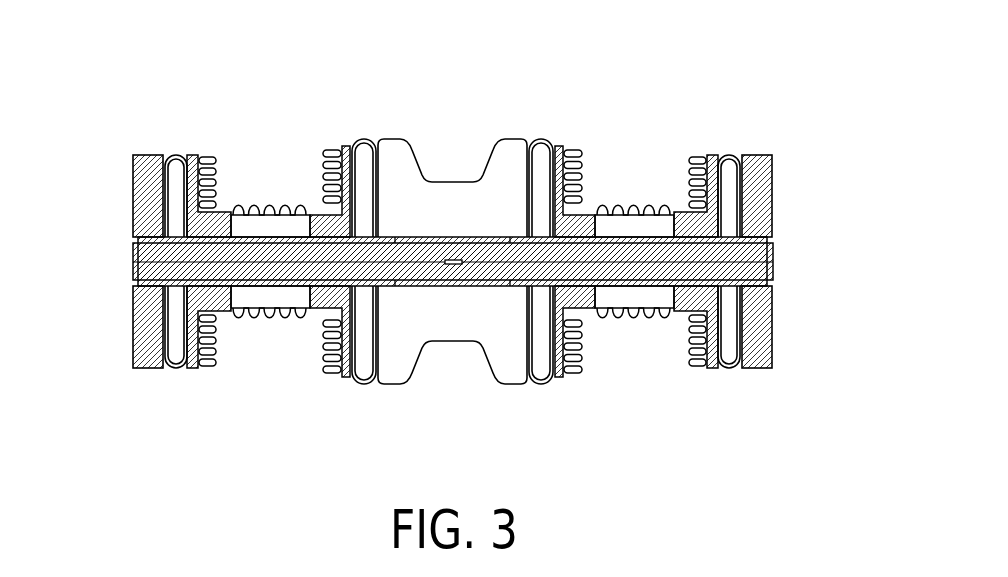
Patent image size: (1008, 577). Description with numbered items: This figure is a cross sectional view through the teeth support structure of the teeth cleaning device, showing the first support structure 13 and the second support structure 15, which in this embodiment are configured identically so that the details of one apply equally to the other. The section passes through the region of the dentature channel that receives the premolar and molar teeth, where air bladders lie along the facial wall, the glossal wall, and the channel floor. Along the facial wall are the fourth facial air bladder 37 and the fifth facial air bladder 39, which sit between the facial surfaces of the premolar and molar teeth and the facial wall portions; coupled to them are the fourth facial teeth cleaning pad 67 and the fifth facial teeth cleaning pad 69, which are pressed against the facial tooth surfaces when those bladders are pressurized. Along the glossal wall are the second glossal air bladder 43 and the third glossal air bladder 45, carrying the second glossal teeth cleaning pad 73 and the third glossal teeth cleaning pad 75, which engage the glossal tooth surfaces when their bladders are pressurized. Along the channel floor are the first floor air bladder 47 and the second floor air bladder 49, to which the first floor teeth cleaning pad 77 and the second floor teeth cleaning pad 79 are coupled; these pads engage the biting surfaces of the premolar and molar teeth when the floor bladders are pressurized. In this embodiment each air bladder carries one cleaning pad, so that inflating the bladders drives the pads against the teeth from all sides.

The first support structure 13 is at (779, 210).
The second support structure 15 is at (779, 297).
The fourth facial air bladder 37 is at (162, 153).
The fifth facial air bladder 39 is at (733, 152).
The second glossal air bladder 43 is at (377, 140).
The third glossal air bladder 45 is at (543, 143).
The first floor air bladder 47 is at (238, 222).
The second floor air bladder 49 is at (632, 233).
The fourth facial teeth cleaning pad 67 is at (168, 155).
The fifth facial teeth cleaning pad 69 is at (712, 152).
The second glossal teeth cleaning pad 73 is at (352, 143).
The third glossal teeth cleaning pad 75 is at (565, 144).
The first floor teeth cleaning pad 77 is at (272, 201).
The second floor teeth cleaning pad 79 is at (605, 208).